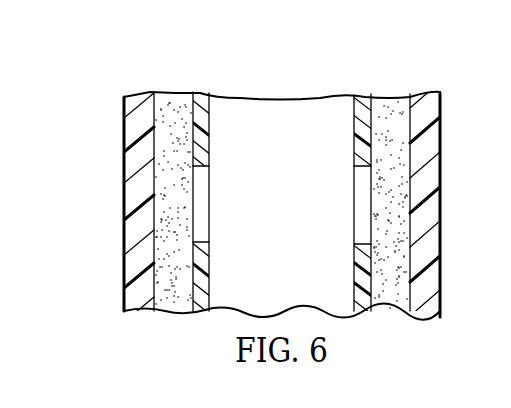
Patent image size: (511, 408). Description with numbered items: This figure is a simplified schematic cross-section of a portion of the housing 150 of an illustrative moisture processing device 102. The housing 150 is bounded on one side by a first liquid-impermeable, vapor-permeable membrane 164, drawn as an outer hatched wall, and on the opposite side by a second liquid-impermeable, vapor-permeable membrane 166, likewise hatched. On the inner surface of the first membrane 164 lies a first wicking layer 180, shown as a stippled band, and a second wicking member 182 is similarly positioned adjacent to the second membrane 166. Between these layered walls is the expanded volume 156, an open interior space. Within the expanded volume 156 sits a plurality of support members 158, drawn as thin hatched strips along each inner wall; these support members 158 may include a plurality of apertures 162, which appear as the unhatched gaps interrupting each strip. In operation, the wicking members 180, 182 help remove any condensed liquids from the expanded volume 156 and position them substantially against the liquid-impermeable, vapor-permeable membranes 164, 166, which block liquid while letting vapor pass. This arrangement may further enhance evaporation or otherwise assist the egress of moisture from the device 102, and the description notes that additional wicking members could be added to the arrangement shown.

The moisture processing device 102 is at (450, 129).
The housing 150 is at (440, 205).
The expanded volume 156 is at (302, 198).
The support members 158 is at (362, 128).
The apertures 162 is at (360, 229).
The first liquid-impermeable, vapor-permeable membrane 164 is at (432, 273).
The second liquid-impermeable, vapor-permeable membrane 166 is at (132, 233).
The first wicking layer 180 is at (393, 96).
The second wicking member 182 is at (172, 96).